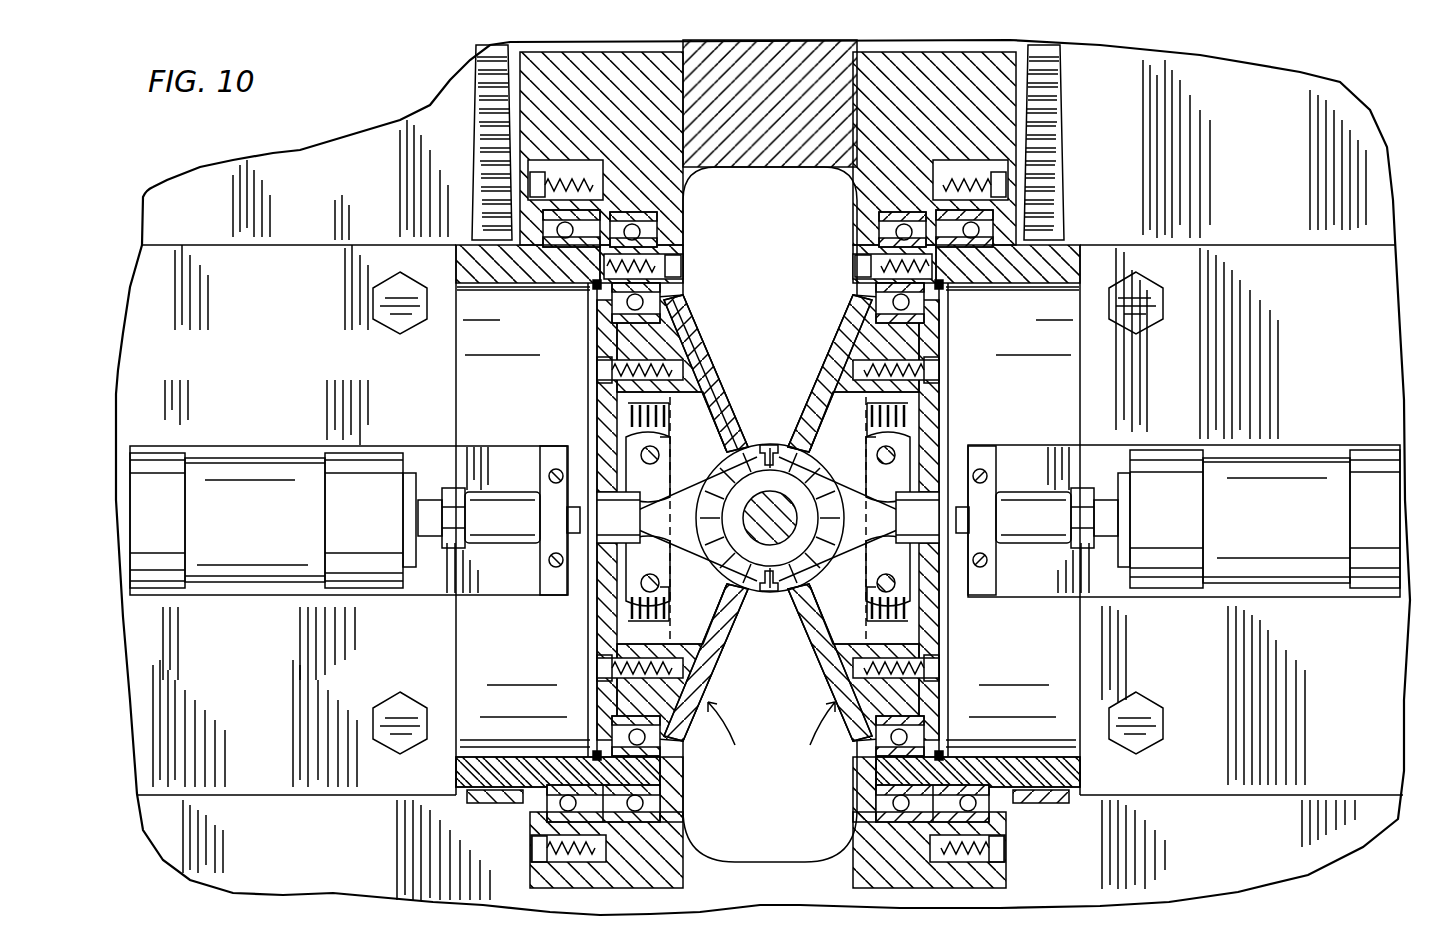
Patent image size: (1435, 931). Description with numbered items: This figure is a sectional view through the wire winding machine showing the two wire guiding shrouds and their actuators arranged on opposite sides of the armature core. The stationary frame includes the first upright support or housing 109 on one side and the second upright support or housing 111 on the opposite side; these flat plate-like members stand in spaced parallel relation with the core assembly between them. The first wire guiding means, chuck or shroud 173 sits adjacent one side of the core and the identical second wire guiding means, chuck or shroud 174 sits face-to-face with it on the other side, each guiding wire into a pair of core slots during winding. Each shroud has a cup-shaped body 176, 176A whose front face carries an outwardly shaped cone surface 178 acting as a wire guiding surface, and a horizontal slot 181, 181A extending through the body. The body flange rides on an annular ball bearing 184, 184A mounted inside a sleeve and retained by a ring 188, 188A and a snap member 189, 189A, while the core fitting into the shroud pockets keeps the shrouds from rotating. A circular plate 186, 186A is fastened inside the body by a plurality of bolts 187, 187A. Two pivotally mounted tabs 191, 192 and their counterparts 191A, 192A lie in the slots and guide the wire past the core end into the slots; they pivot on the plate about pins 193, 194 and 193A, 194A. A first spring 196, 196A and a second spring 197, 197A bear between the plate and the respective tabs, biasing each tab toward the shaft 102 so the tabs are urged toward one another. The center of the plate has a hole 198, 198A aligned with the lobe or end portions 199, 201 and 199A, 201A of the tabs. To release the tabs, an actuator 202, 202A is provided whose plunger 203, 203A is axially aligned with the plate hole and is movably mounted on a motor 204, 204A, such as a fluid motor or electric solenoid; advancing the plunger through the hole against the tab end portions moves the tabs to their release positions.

The shaft 102 is at (775, 497).
The first upright support or housing 109 is at (567, 118).
The second upright support or housing 111 is at (1012, 118).
The first wire guiding means, chuck or shroud 173 is at (729, 737).
The second wire guiding means, chuck or shroud 174 is at (816, 737).
The cup-shaped body 176 is at (700, 335).
The cup-shaped body 176A is at (850, 330).
The cone surface 178 is at (755, 365).
The horizontal slot 181 is at (718, 628).
The horizontal slot 181A is at (805, 635).
The annular ball bearing 184 is at (607, 727).
The annular ball bearing 184A is at (945, 345).
The circular plate 186 is at (605, 700).
The circular plate 186A is at (931, 700).
The bolts 187 is at (600, 370).
The bolts 187A is at (936, 668).
The ring 188 is at (590, 302).
The ring 188A is at (945, 305).
The snap member 189 is at (595, 286).
The snap member 189A is at (947, 283).
The tab 191 is at (720, 430).
The tab 191A is at (803, 430).
The tab 192 is at (728, 615).
The tab 192A is at (730, 612).
The pin 193 is at (642, 452).
The pin 193A is at (900, 452).
The pin 194 is at (607, 607).
The pin 194A is at (929, 607).
The first spring 196 is at (632, 428).
The first spring 196A is at (912, 428).
The second spring 197 is at (607, 620).
The second spring 197A is at (929, 620).
The hole 198 is at (603, 527).
The hole 198A is at (933, 527).
The lobe or end portion 199 is at (640, 493).
The lobe or end portion 199A is at (896, 493).
The lobe or end portion 201 is at (612, 563).
The lobe or end portion 201A is at (924, 563).
The actuator 202 is at (246, 484).
The actuator 202A is at (1301, 484).
The plunger 203 is at (490, 503).
The plunger 203A is at (1020, 510).
The motor 204 is at (265, 570).
The motor 204A is at (1300, 570).